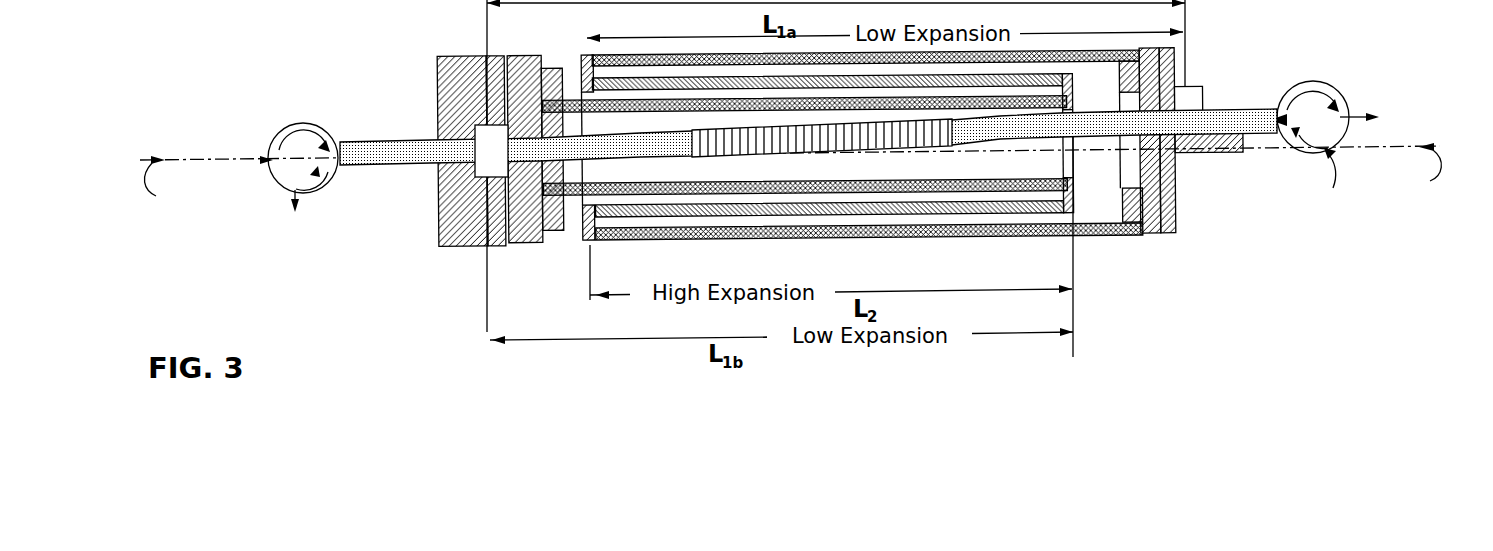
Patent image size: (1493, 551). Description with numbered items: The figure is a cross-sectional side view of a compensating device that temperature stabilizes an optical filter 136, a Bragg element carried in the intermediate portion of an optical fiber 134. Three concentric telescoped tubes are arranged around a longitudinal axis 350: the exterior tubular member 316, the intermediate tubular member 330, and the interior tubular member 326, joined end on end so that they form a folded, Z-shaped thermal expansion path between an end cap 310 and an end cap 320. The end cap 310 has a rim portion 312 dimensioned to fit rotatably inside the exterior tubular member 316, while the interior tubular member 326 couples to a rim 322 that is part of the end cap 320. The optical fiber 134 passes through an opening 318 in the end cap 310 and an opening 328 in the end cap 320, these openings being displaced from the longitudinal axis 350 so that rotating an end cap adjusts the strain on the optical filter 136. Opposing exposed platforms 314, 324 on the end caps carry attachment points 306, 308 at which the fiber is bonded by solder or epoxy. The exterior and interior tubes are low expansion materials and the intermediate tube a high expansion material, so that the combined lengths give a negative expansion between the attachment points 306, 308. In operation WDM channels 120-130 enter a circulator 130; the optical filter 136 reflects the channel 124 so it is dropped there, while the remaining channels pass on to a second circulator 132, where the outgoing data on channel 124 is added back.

The WDM channels 120-130 is at (818, 137).
The channel 124 is at (813, 195).
The circulator 130 is at (307, 124).
The second circulator 132 is at (1330, 83).
The optical fiber 134 is at (1233, 115).
The optical filter 136 is at (925, 140).
The attachment point 306 is at (1198, 100).
The attachment point 308 is at (486, 127).
The end cap 310 is at (1182, 190).
The rim portion 312 is at (1164, 234).
The exposed platform 314 is at (1213, 153).
The exterior tubular member 316 is at (818, 236).
The opening 318 is at (1172, 58).
The end cap 320 is at (515, 50).
The rim 322 is at (568, 226).
The exposed platform 324 is at (480, 248).
The interior tubular member 326 is at (1003, 188).
The opening 328 is at (440, 83).
The intermediate tubular member 330 is at (958, 207).
The longitudinal axis 350 is at (790, 184).